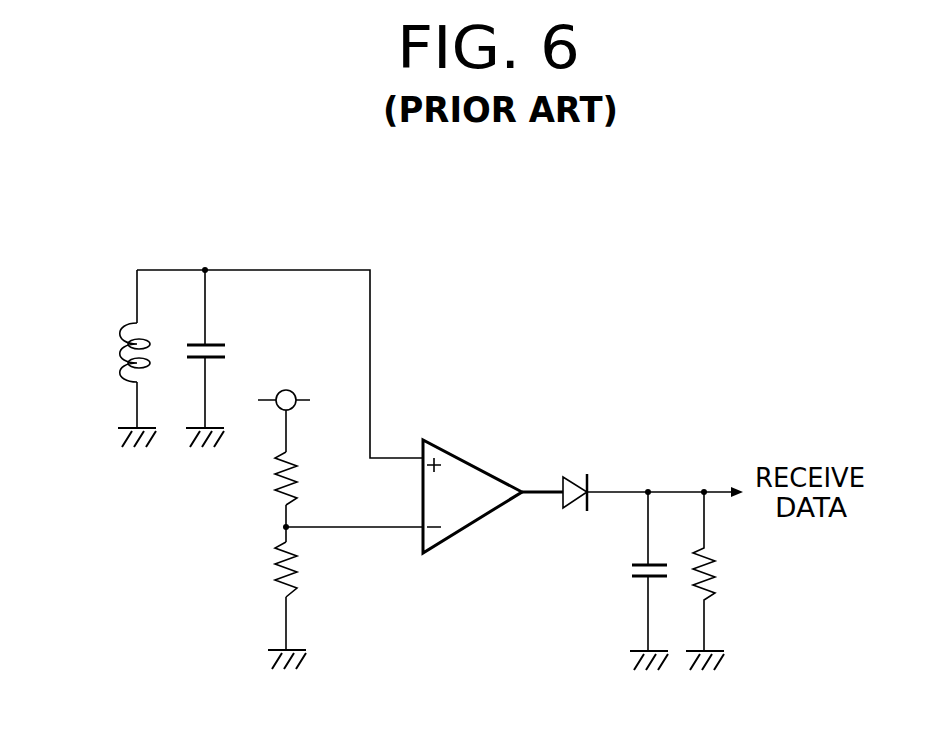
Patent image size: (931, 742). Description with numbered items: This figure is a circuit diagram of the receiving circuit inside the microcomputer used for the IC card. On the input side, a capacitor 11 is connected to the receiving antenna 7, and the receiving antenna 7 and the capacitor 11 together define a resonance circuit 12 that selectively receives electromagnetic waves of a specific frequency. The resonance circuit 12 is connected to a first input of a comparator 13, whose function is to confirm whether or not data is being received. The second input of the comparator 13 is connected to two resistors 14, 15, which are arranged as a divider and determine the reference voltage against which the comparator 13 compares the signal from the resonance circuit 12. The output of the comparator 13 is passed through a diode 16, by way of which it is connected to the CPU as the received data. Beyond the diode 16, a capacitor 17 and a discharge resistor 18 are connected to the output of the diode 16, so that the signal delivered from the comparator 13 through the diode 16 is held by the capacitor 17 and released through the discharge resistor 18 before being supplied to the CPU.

The receiving antenna 7 is at (118, 356).
The capacitor 11 is at (210, 345).
The resonance circuit 12 is at (160, 270).
The comparator 13 is at (468, 458).
The resistor 14 is at (298, 572).
The resistor 15 is at (298, 480).
The diode 16 is at (572, 482).
The capacitor 17 is at (641, 578).
The discharge resistor 18 is at (714, 576).